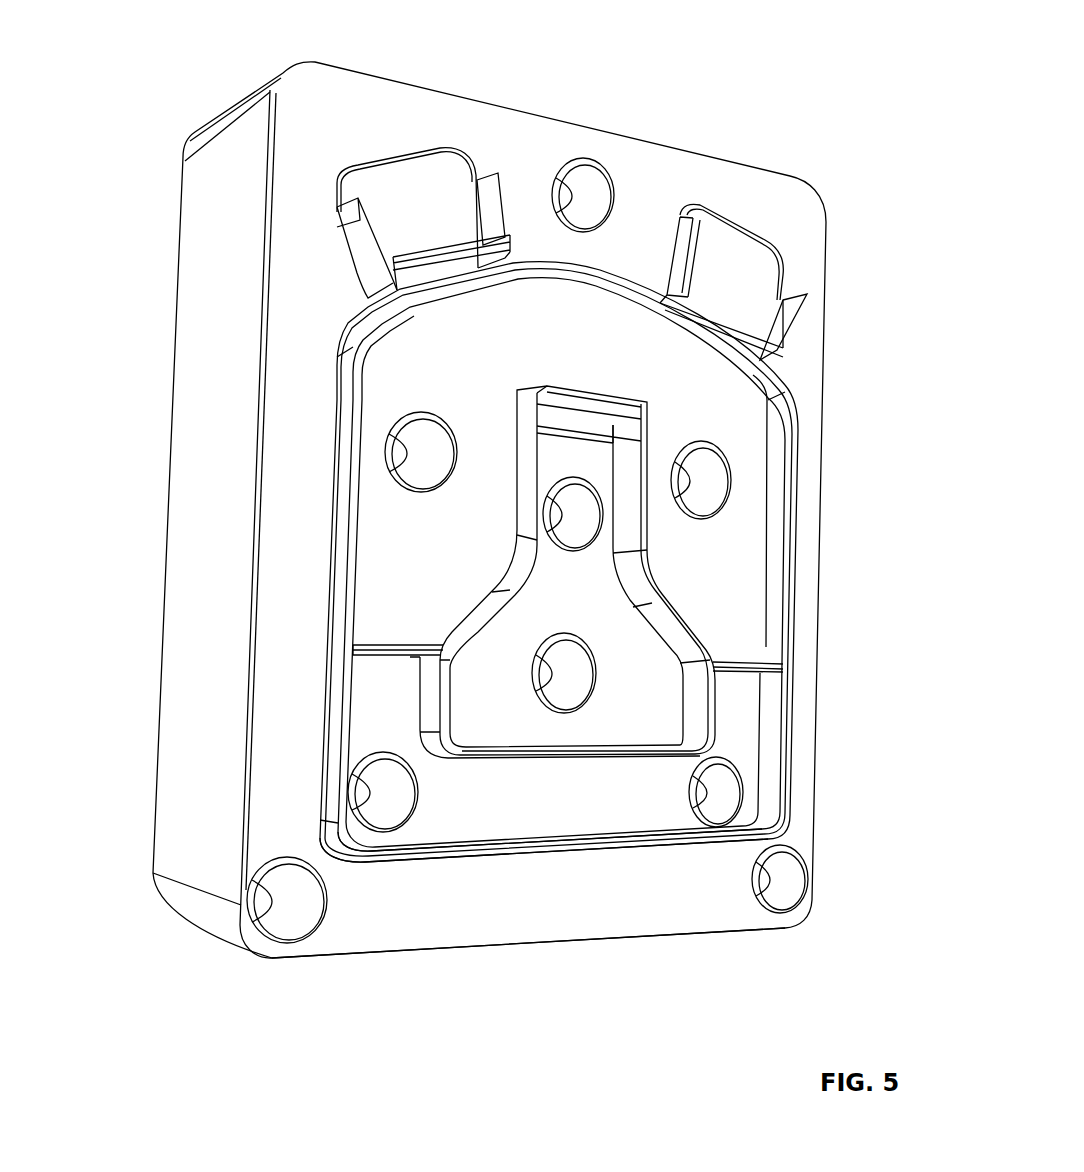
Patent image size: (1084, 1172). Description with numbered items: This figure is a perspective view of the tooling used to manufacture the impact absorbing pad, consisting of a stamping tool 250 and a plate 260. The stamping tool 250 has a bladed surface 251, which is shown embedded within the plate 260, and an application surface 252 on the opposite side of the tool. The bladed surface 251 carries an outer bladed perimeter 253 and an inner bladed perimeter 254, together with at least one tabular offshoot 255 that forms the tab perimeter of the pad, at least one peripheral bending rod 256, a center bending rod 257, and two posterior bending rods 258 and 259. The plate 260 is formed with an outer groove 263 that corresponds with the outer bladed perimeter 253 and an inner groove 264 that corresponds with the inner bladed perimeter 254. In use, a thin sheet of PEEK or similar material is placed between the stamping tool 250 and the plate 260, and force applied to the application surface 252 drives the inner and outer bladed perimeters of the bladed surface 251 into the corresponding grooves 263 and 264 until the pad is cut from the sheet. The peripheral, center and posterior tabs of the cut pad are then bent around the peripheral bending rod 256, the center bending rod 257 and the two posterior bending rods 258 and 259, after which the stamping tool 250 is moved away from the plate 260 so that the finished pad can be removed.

The stamping tool 250 is at (796, 807).
The bladed surface 251 is at (322, 845).
The application surface 252 is at (342, 802).
The outer bladed perimeter 253 is at (355, 445).
The inner bladed perimeter 254 is at (463, 752).
The tabular offshoot 255 is at (357, 218).
The peripheral bending rod 256 is at (462, 277).
The center bending rod 257 is at (596, 406).
The posterior bending rod 258 is at (395, 642).
The posterior bending rod 259 is at (767, 662).
The plate 260 is at (683, 937).
The outer groove 263 is at (340, 398).
The inner groove 264 is at (515, 760).